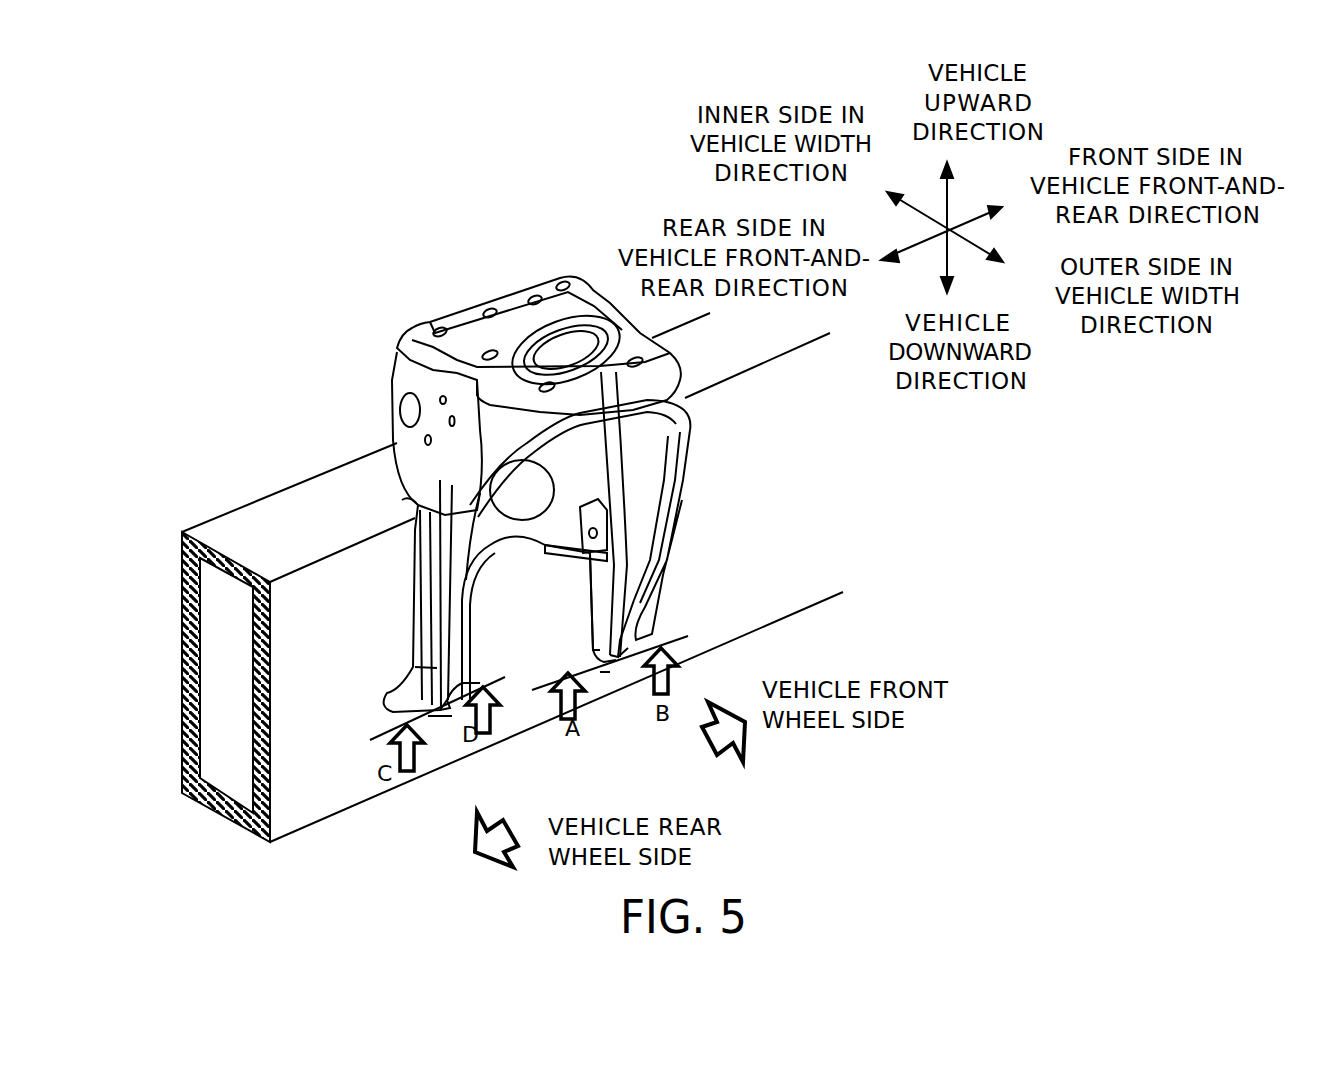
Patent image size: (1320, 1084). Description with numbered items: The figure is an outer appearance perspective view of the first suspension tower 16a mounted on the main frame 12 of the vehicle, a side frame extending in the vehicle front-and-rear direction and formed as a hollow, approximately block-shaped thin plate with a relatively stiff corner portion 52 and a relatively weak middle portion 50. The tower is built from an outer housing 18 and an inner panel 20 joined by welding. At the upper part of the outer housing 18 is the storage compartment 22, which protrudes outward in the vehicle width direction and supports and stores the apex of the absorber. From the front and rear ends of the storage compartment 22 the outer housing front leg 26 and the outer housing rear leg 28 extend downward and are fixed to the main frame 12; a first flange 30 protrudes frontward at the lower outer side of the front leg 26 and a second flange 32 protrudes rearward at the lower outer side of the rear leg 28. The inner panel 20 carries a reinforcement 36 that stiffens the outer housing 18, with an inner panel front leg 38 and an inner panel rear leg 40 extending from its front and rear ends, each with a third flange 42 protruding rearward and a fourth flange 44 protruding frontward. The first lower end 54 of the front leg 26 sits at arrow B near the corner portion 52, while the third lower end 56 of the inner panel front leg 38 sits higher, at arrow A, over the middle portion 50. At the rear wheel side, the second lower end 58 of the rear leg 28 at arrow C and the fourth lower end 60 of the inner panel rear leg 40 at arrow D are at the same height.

The main frame 12 is at (537, 577).
The first suspension tower 16a is at (523, 498).
The outer housing 18 is at (681, 381).
The inner panel 20 is at (580, 488).
The storage compartment 22 is at (487, 382).
The outer housing front leg 26 is at (655, 583).
The outer housing rear leg 28 is at (428, 632).
The first flange 30 is at (643, 636).
The second flange 32 is at (400, 697).
The reinforcement 36 is at (608, 494).
The inner panel front leg 38 is at (592, 610).
The inner panel rear leg 40 is at (460, 628).
The third flange 42 is at (590, 653).
The fourth flange 44 is at (455, 681).
The middle portion 50 is at (805, 492).
The corner portion 52 is at (825, 580).
The first lower end 54 is at (618, 678).
The third lower end 56 is at (598, 678).
The second lower end 58 is at (433, 717).
The fourth lower end 60 is at (443, 717).